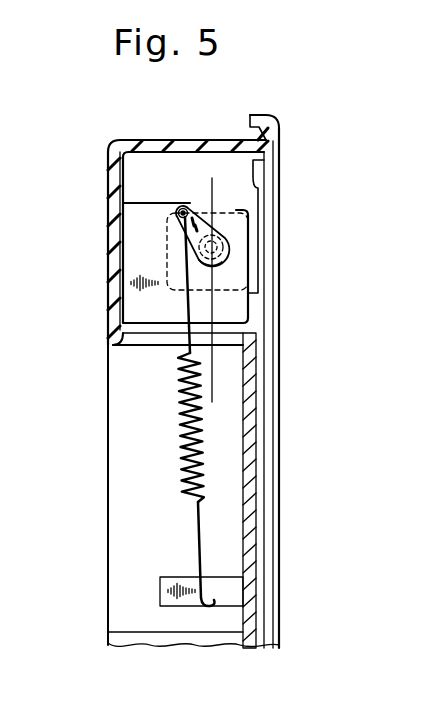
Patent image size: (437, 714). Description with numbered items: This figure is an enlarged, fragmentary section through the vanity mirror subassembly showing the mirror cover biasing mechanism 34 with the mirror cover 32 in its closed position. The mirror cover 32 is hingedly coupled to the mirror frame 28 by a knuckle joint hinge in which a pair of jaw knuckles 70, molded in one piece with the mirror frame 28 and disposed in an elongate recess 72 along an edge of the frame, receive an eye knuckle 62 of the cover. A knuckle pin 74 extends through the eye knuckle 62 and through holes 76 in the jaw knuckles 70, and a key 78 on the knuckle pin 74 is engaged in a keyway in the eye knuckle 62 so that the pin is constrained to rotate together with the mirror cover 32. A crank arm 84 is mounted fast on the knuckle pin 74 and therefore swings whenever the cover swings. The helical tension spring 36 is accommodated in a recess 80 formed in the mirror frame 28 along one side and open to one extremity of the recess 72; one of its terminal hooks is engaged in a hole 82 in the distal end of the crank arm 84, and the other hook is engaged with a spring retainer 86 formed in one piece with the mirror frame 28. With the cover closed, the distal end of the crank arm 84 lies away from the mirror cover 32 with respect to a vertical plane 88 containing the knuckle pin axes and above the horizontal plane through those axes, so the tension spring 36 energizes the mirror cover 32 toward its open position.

The mirror frame 28 is at (281, 134).
The mirror cover 32 is at (281, 348).
The cover biasing mechanism 34 is at (163, 484).
The helical tension spring 36 is at (182, 415).
The eye knuckle 62 is at (242, 212).
The jaw knuckles 70 is at (252, 262).
The recess 72 is at (181, 150).
The knuckle pin 74 is at (218, 268).
The holes 76 is at (218, 262).
The key 78 is at (222, 236).
The recess 80 is at (240, 463).
The hole 82 is at (184, 208).
The crank arm 84 is at (181, 214).
The spring retainer 86 is at (160, 587).
The vertical plane 88 is at (212, 363).